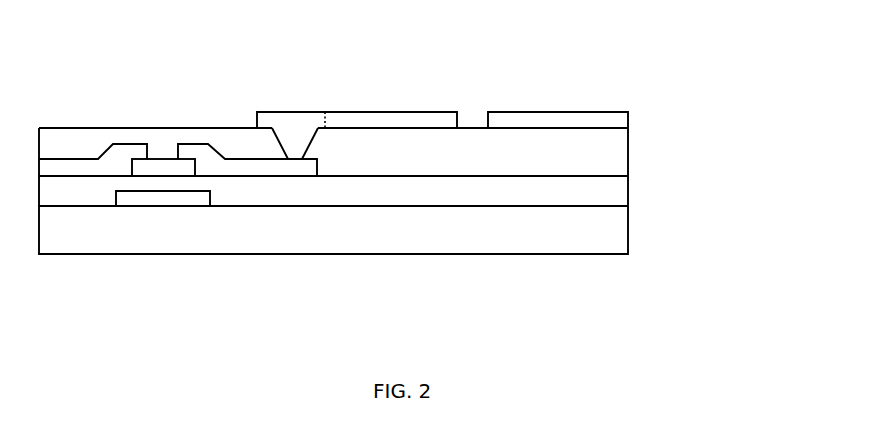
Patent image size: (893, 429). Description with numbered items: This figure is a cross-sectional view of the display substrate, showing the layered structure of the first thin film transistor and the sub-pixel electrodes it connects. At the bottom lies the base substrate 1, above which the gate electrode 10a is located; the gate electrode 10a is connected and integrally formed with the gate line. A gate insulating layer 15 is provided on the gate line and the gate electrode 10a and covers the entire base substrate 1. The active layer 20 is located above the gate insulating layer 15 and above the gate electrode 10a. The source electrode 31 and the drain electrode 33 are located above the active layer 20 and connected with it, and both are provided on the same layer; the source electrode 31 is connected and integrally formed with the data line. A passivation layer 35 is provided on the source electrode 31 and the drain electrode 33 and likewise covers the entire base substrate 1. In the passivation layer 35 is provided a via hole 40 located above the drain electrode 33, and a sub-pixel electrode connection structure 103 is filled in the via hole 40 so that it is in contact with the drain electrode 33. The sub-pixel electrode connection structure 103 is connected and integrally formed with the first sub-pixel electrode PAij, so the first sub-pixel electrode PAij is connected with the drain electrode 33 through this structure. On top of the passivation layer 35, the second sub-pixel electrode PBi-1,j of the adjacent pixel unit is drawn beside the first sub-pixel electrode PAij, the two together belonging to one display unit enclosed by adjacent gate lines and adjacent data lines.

The base substrate 1 is at (614, 241).
The gate insulating layer 15 is at (614, 193).
The passivation layer 35 is at (612, 157).
The gate electrode 10a is at (160, 199).
The active layer 20 is at (172, 169).
The source electrode 31 is at (127, 153).
The drain electrode 33 is at (202, 155).
The sub-pixel electrode connection structure 103 is at (293, 150).
The via hole 40 is at (310, 145).
The first sub-pixel electrode PAij is at (393, 123).
The second sub-pixel electrode PBi-1,j is at (547, 118).